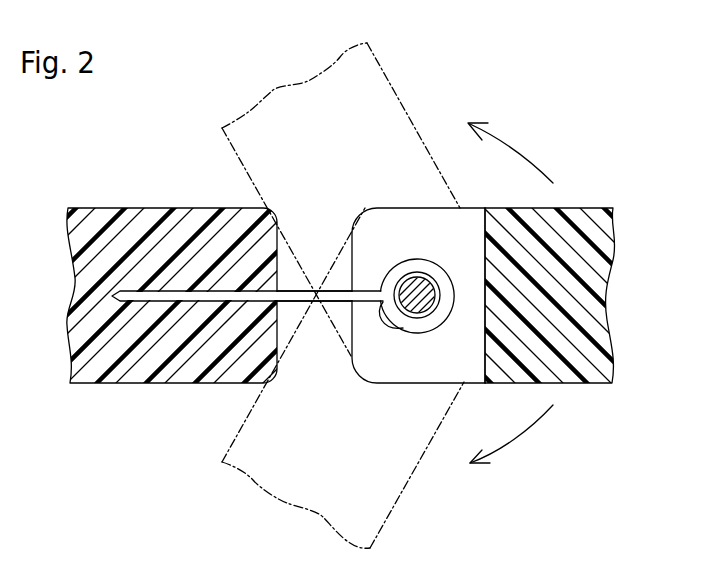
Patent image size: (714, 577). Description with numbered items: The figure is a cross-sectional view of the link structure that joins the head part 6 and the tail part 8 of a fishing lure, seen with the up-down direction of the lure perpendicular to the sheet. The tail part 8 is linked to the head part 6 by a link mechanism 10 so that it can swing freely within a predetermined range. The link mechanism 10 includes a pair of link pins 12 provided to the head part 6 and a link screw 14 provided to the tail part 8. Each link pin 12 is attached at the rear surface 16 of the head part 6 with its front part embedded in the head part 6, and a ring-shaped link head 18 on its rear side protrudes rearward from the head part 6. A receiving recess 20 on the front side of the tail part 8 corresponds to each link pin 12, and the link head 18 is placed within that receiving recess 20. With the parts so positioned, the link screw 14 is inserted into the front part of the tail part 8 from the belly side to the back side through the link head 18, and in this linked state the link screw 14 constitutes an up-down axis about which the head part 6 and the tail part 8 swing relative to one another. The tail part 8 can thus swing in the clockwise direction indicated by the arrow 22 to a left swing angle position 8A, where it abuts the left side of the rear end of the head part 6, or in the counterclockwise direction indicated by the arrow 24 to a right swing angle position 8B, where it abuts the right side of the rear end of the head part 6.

The head part 6 is at (186, 228).
The tail part 8 is at (596, 232).
The left swing angle position 8A is at (397, 484).
The right swing angle position 8B is at (397, 103).
The link mechanism 10 is at (398, 248).
The link pin 12 is at (188, 303).
The link screw 14 is at (404, 331).
The rear surface 16 is at (278, 326).
The link head 18 is at (414, 258).
The receiving recess 20 is at (488, 338).
The arrow 22 is at (514, 443).
The arrow 24 is at (514, 143).